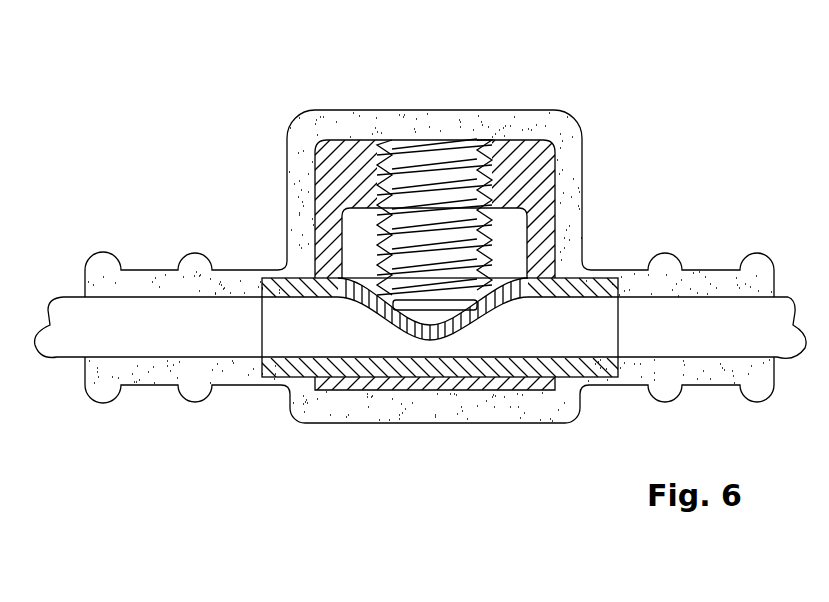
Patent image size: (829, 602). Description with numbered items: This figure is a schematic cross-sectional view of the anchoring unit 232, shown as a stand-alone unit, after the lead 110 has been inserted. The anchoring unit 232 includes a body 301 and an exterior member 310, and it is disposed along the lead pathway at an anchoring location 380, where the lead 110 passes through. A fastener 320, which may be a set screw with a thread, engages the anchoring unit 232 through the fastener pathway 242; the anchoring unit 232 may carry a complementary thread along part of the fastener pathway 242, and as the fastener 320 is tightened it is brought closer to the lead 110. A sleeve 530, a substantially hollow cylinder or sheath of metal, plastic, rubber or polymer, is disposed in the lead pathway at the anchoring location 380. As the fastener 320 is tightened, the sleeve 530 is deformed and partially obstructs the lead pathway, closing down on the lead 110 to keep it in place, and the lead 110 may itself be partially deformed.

The lead 110 is at (190, 317).
The anchoring unit 232 is at (453, 452).
The fastener pathway 242 is at (433, 76).
The body 301 is at (527, 160).
The exterior member 310 is at (310, 128).
The fastener 320 is at (447, 145).
The anchoring location 380 is at (480, 344).
The sleeve 530 is at (290, 372).